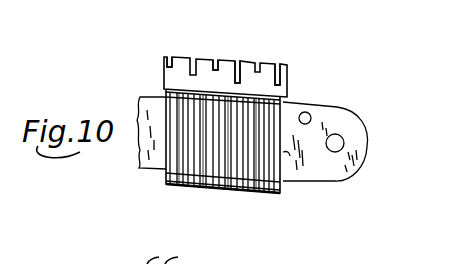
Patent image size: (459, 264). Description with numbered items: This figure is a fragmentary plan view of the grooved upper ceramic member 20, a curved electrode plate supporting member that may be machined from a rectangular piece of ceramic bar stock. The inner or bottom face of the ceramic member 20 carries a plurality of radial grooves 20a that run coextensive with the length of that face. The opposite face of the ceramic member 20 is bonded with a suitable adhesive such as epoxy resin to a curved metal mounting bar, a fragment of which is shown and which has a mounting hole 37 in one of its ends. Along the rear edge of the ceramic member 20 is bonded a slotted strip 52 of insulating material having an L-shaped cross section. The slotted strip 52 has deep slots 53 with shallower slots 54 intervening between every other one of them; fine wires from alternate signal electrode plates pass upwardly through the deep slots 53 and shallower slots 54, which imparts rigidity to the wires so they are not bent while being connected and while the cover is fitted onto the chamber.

The grooved upper ceramic member 20 is at (290, 182).
The radial grooves 20a is at (198, 187).
The mounting hole 37 is at (337, 134).
The slotted strip 52 is at (290, 68).
The deep slots 53 is at (278, 37).
The shallower slots 54 is at (220, 36).